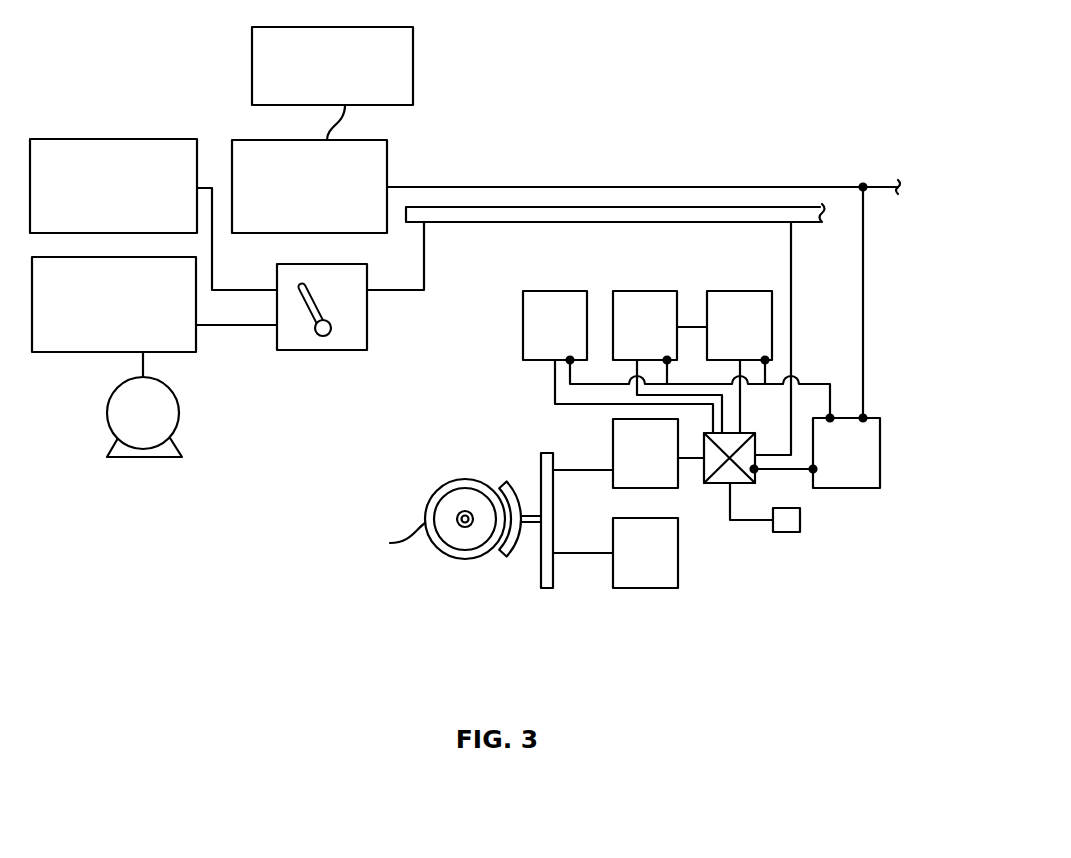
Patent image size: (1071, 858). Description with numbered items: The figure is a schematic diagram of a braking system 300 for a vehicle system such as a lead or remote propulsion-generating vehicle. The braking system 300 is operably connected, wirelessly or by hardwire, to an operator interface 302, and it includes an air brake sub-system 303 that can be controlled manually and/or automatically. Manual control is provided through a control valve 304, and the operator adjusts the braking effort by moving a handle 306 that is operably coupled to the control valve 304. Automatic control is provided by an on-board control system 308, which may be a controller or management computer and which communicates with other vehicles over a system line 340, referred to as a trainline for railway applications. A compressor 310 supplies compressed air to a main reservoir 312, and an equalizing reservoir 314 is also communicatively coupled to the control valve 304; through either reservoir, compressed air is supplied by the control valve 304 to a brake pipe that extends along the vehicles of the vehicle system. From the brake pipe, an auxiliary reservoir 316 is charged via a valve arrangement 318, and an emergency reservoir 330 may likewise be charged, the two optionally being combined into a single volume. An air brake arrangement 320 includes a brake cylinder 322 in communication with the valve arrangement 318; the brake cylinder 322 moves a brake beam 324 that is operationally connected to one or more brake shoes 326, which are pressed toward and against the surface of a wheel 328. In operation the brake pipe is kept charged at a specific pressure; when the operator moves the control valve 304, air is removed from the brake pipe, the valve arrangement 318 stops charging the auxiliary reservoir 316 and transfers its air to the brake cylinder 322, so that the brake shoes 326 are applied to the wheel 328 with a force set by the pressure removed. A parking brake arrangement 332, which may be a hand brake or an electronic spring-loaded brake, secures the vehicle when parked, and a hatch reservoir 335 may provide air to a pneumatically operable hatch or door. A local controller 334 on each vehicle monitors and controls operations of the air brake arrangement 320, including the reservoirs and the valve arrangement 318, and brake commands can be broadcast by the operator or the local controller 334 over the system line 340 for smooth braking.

The braking system 300 is at (853, 95).
The operator interface 302 is at (413, 65).
The air brake sub-system 303 is at (573, 148).
The control valve 304 is at (347, 335).
The handle 306 is at (320, 338).
The on-board control system 308 is at (387, 168).
The compressor 310 is at (180, 413).
The main reservoir 312 is at (78, 352).
The equalizing reservoir 314 is at (143, 139).
The auxiliary reservoir 316 is at (645, 291).
The valve arrangement 318 is at (754, 469).
The air brake arrangement 320 is at (553, 423).
The brake cylinder 322 is at (668, 488).
The brake beam 324 is at (553, 575).
The brake shoe 326 is at (510, 555).
The wheel 328 is at (462, 480).
The emergency reservoir 330 is at (740, 291).
The parking brake arrangement 332 is at (678, 572).
The local controller 334 is at (880, 455).
The hatch reservoir 335 is at (555, 291).
The system line 340 is at (765, 187).